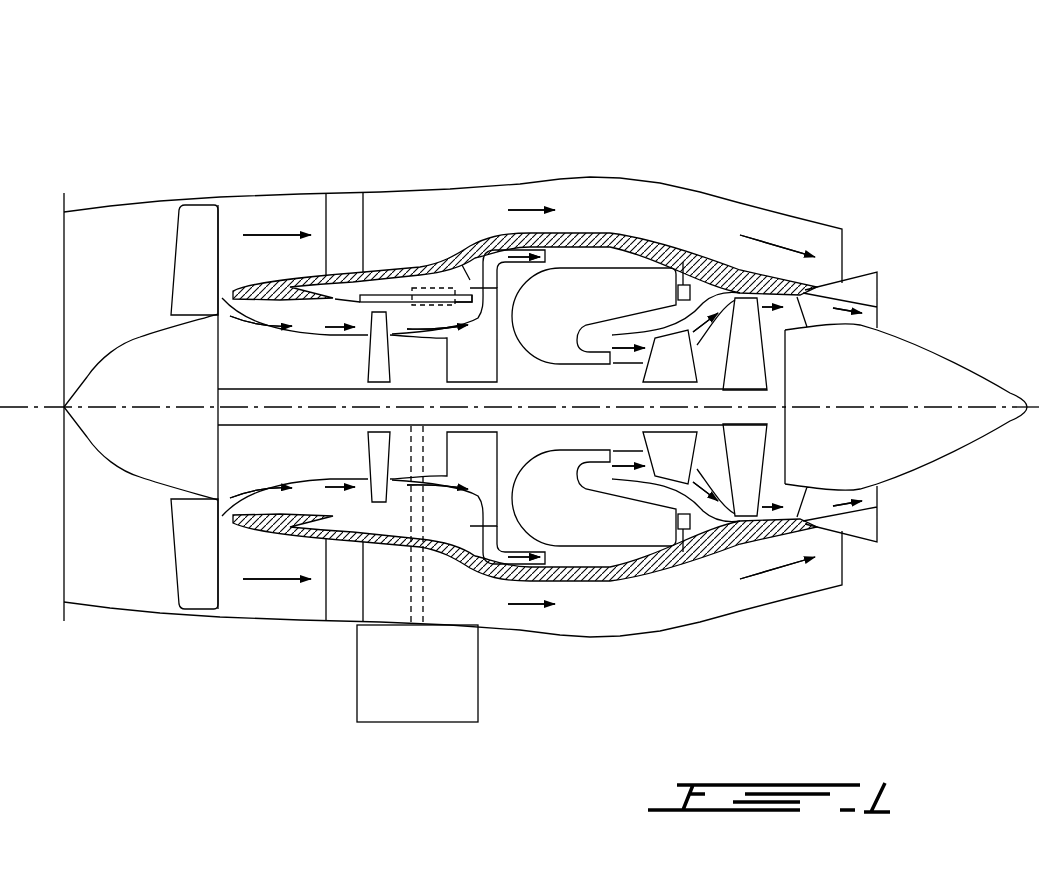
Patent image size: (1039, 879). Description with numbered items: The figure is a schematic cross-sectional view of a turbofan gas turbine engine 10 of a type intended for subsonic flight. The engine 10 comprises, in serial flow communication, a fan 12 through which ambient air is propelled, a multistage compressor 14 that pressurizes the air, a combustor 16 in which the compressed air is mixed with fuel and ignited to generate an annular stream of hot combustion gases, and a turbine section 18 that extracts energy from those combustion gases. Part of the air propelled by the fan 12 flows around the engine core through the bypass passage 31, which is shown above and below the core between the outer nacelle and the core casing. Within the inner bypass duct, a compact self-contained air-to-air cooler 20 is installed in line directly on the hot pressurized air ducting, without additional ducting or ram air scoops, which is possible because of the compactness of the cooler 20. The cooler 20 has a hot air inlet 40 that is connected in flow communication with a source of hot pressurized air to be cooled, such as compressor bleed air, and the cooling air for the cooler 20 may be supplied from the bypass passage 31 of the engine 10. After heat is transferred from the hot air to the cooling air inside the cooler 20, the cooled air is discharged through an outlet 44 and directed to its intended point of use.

The turbofan gas turbine engine 10 is at (735, 128).
The fan 12 is at (190, 538).
The multistage compressor 14 is at (352, 503).
The combustor 16 is at (595, 287).
The turbine section 18 is at (708, 465).
The air-to-air cooler 20 is at (432, 288).
The bypass passage 31 is at (373, 223).
The hot air inlet 40 is at (468, 280).
The outlet 44 is at (405, 292).